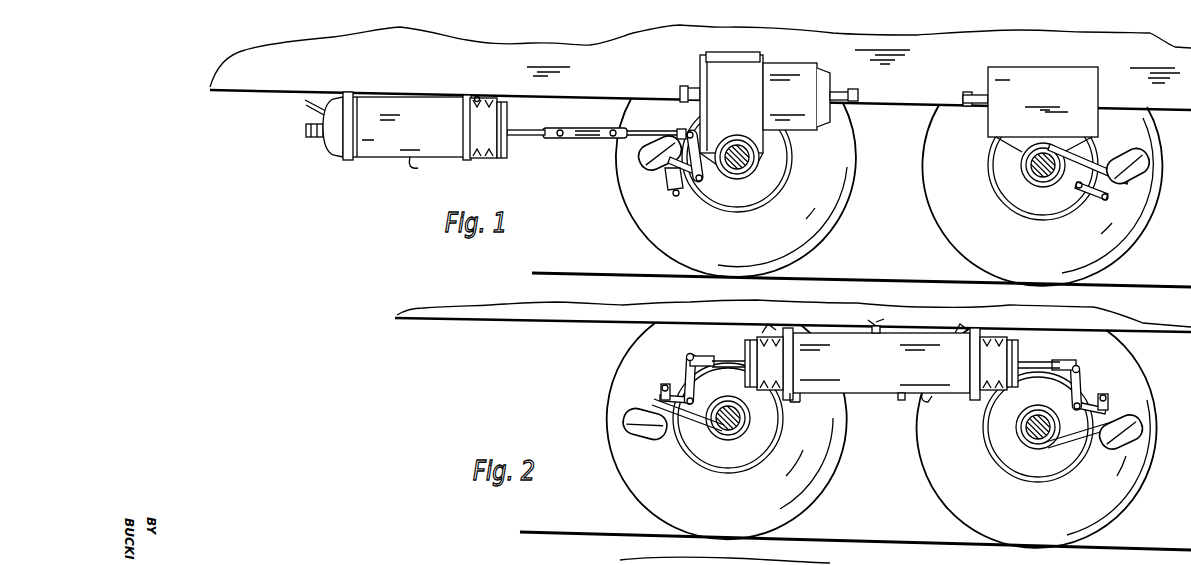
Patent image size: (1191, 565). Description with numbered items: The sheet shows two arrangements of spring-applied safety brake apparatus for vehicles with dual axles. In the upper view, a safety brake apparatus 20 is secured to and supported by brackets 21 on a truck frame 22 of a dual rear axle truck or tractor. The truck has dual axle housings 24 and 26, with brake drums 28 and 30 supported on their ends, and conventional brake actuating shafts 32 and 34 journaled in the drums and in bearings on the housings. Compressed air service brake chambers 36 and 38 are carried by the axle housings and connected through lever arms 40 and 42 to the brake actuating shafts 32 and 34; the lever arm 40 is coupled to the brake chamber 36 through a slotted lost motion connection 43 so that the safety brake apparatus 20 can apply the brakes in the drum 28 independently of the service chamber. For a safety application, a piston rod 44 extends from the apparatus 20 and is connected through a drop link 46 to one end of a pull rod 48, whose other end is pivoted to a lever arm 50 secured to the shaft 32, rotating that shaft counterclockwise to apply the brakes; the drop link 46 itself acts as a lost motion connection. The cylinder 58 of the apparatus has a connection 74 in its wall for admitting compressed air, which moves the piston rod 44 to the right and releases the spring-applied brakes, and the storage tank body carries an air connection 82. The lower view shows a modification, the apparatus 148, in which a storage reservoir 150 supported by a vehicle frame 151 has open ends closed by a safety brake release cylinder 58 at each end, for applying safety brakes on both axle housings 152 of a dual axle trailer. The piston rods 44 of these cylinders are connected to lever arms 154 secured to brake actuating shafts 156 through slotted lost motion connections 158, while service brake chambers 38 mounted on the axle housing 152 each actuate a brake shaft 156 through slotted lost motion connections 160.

In FIG. 1, the safety brake apparatus 20 is at (406, 134).
In FIG. 1, the brackets 21 is at (357, 93).
In FIG. 2, the brackets 21 is at (793, 333).
In FIG. 1, the truck frame 22 is at (257, 78).
In FIG. 1, the axle housing 24 is at (757, 167).
In FIG. 1, the axle housing 26 is at (1042, 183).
In FIG. 1, the brake drum 28 is at (757, 197).
In FIG. 1, the brake drum 30 is at (1003, 181).
In FIG. 1, the brake actuating shaft 32 is at (693, 193).
In FIG. 1, the brake actuating shaft 34 is at (1088, 179).
In FIG. 1, the service brake chamber 36 is at (645, 168).
In FIG. 1, the service brake chamber 38 is at (1133, 165).
In FIG. 2, the service brake chamber 38 is at (638, 430).
In FIG. 1, the lever arm 40 is at (673, 183).
In FIG. 1, the lever arm 42 is at (1094, 201).
In FIG. 1, the slotted lost motion connection 43 is at (677, 198).
In FIG. 1, the piston rod 44 is at (525, 133).
In FIG. 2, the piston rod 44 is at (720, 358).
In FIG. 1, the drop link 46 is at (585, 133).
In FIG. 1, the pull rod 48 is at (652, 134).
In FIG. 1, the lever arm 50 is at (682, 92).
In FIG. 1, the cylinder 58 is at (487, 152).
In FIG. 2, the cylinder 58 is at (762, 332).
In FIG. 1, the connection 74 is at (478, 100).
In FIG. 1, the air connection 82 is at (400, 162).
In FIG. 2, the safety brake apparatus 148 is at (927, 398).
In FIG. 2, the storage reservoir 150 is at (876, 365).
In FIG. 2, the vehicle frame 151 is at (578, 313).
In FIG. 2, the axle housing 152 is at (730, 440).
In FIG. 2, the lever arm 154 is at (683, 372).
In FIG. 2, the brake actuating shaft 156 is at (657, 396).
In FIG. 2, the slotted lost motion connection 158 is at (690, 354).
In FIG. 2, the slotted lost motion connection 160 is at (663, 386).